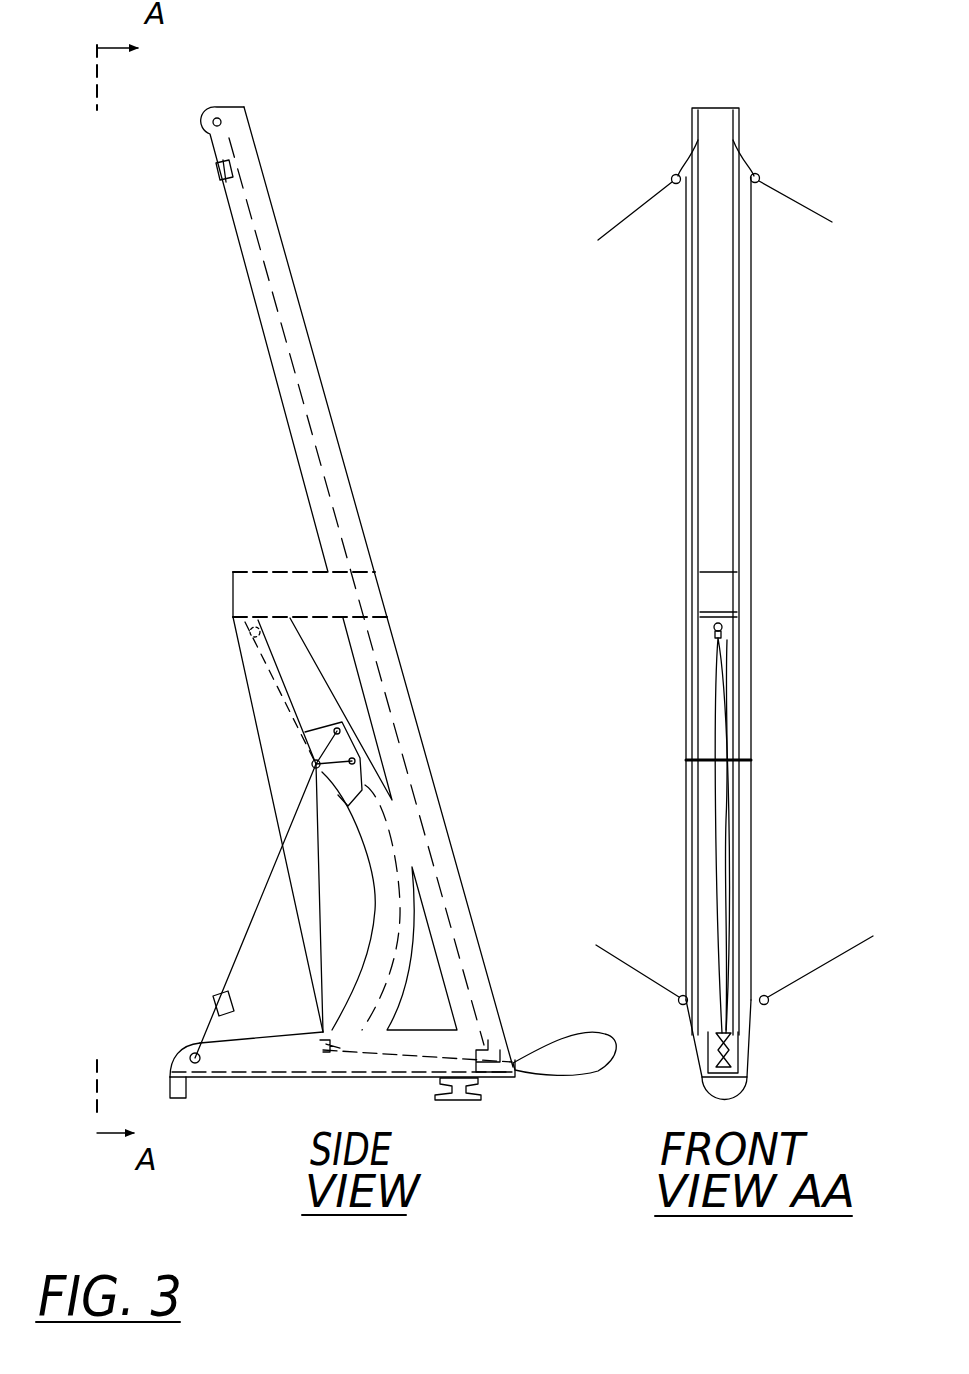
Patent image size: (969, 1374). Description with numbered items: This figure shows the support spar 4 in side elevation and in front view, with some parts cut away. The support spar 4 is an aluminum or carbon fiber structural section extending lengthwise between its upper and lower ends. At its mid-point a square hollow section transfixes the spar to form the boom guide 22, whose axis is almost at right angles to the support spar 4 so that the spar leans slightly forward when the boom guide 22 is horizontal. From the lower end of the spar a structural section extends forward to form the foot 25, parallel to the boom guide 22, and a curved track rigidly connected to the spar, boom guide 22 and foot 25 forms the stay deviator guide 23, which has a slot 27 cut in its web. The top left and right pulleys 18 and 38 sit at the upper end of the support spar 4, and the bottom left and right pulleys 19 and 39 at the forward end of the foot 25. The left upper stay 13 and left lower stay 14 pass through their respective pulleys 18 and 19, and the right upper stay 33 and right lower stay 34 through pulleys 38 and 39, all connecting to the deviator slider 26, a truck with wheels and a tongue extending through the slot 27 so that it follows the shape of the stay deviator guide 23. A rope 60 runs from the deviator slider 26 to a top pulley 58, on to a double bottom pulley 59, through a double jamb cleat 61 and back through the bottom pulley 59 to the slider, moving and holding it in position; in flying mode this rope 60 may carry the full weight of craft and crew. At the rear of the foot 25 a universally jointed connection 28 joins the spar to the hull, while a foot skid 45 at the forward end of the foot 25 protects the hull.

The support spar 4 is at (477, 603).
The left upper stay 13 is at (818, 217).
The left lower stay 14 is at (835, 966).
The top left pulley 18 is at (511, 199).
The bottom left pulley 19 is at (786, 971).
The boom guide 22 is at (449, 594).
The stay deviator guide 23 is at (347, 898).
The foot 25 is at (342, 1078).
The deviator slider 26 is at (310, 765).
The slot 27 is at (713, 887).
The universally jointed connection 28 is at (485, 1102).
The right upper stay 33 is at (609, 229).
The right lower stay 34 is at (615, 969).
The top right pulley 38 is at (380, 202).
The bottom right pulley 39 is at (434, 911).
The foot skid 45 is at (157, 1082).
The top pulley 58 is at (708, 633).
The double bottom pulley 59 is at (305, 1048).
The rope 60 is at (564, 1041).
The double jamb cleat 61 is at (493, 1052).